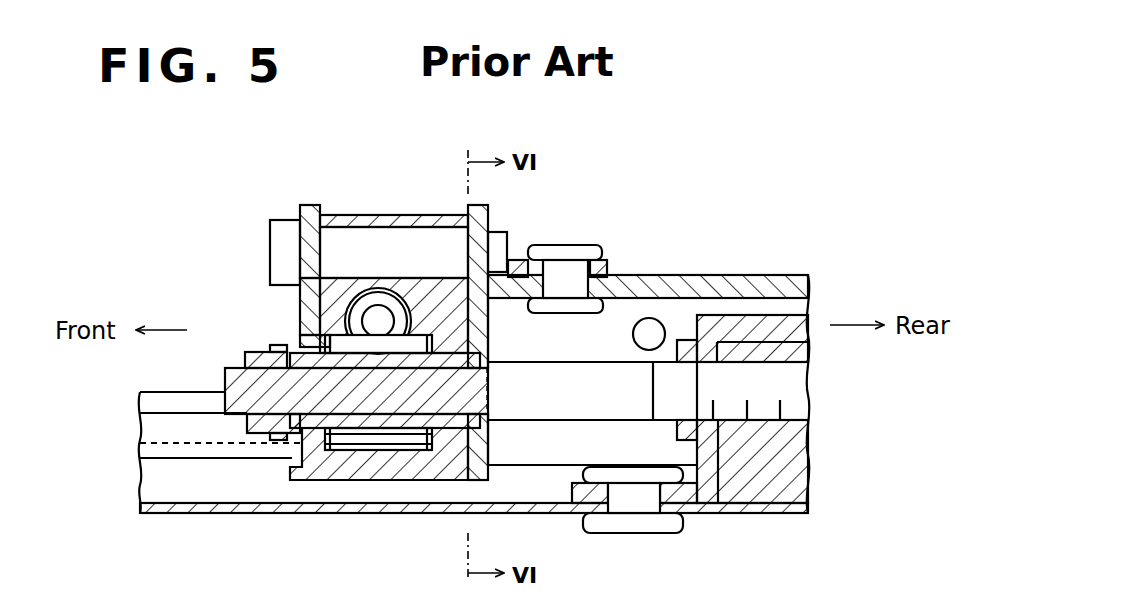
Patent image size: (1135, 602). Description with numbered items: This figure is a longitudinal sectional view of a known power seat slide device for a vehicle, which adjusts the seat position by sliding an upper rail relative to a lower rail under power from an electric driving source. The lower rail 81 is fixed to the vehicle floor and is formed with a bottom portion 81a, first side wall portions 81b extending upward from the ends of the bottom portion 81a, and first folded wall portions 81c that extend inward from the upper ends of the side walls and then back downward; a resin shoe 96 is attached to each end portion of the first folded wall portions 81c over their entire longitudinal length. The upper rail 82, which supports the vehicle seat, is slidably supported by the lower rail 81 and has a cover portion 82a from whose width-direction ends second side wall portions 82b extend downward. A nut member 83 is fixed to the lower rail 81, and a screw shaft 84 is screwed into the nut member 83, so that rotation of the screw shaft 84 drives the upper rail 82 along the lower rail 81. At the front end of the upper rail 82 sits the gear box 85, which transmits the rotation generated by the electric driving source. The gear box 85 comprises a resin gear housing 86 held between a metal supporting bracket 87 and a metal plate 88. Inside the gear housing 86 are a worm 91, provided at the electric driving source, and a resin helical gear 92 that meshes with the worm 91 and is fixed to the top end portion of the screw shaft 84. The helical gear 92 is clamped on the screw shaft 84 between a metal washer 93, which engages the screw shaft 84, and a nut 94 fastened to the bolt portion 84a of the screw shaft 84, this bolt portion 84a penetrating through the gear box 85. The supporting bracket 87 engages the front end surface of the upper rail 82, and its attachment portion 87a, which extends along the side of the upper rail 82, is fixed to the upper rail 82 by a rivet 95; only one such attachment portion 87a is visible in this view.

The lower rail 81 is at (162, 514).
The bottom portion 81a is at (208, 512).
The first side wall portion 81b is at (150, 486).
The first folded wall portion 81c is at (142, 403).
The upper rail 82 is at (778, 285).
The cover portion 82a is at (535, 457).
The second side wall portion 82b is at (720, 290).
The nut member 83 is at (751, 490).
The screw shaft 84 is at (787, 369).
The bolt portion 84a is at (236, 374).
The gear box 85 is at (425, 216).
The gear housing 86 is at (304, 300).
The supporting bracket 87 is at (490, 218).
The attachment portion 87a is at (607, 272).
The plate 88 is at (308, 206).
The worm 91 is at (395, 280).
The helical gear 92 is at (305, 340).
The washer 93 is at (490, 427).
The nut 94 is at (256, 433).
The rivet 95 is at (563, 250).
The resin shoe 96 is at (153, 428).